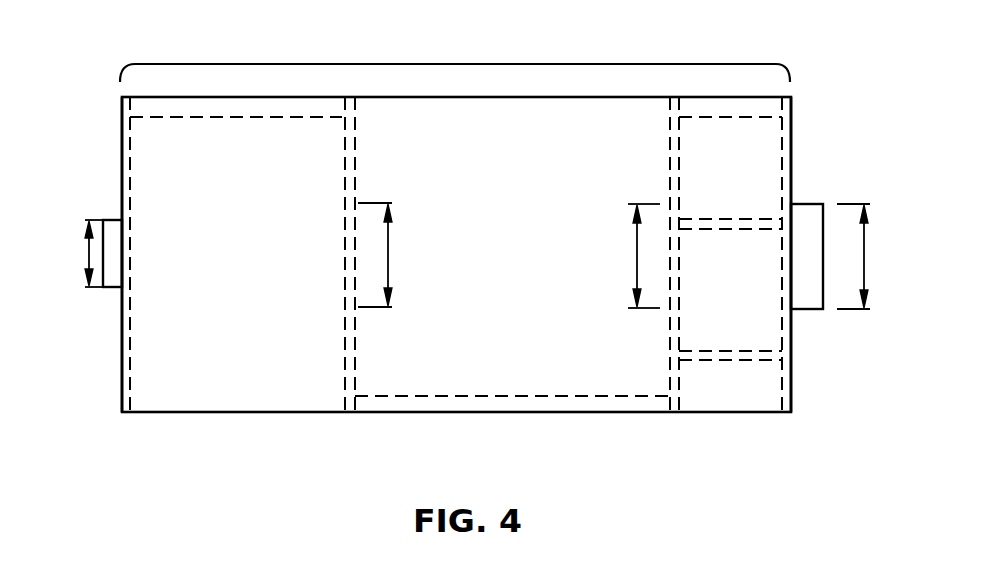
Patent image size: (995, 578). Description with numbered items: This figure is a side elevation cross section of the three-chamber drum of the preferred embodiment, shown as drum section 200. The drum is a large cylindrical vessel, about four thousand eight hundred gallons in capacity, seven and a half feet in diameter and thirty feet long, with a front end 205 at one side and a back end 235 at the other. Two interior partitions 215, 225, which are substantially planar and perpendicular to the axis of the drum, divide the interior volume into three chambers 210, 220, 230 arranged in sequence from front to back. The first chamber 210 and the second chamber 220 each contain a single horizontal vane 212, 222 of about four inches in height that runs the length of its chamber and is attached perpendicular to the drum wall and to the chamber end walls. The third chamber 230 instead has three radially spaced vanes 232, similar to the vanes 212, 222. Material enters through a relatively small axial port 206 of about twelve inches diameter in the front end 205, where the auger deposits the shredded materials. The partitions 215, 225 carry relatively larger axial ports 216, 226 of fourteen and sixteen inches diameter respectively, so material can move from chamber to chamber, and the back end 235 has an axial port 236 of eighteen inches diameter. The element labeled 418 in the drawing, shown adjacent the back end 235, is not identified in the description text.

The drum section 200 is at (438, 63).
The front end 205 is at (122, 153).
The axial port 206 is at (87, 257).
The chamber 210 is at (230, 377).
The horizontal vane 212 is at (182, 117).
The interior partition 215 is at (345, 183).
The axial port 216 is at (390, 250).
The chamber 220 is at (458, 373).
The horizontal vane 222 is at (570, 395).
The interior partition 225 is at (670, 132).
The axial port 226 is at (637, 253).
The chamber 230 is at (723, 385).
The radially spaced vanes 232 is at (718, 120).
The back end 235 is at (792, 142).
The axial port 236 is at (866, 256).
The connector 418 is at (810, 310).